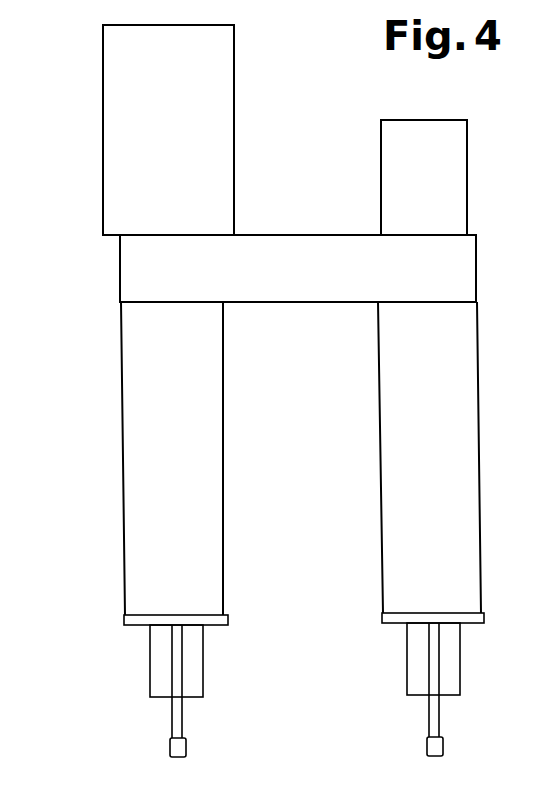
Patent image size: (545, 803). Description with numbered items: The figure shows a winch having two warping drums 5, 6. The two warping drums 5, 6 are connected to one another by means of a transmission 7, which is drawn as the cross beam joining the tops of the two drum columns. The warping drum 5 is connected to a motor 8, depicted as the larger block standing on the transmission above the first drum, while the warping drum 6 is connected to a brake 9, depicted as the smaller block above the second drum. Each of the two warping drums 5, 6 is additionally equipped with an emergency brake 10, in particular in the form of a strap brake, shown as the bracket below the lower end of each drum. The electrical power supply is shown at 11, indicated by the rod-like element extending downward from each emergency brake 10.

The warping drum 5 is at (212, 458).
The warping drum 6 is at (385, 455).
The transmission 7 is at (293, 242).
The motor 8 is at (113, 188).
The brake 9 is at (387, 187).
The emergency brake 10 is at (195, 667).
The electrical power supply 11 is at (178, 723).